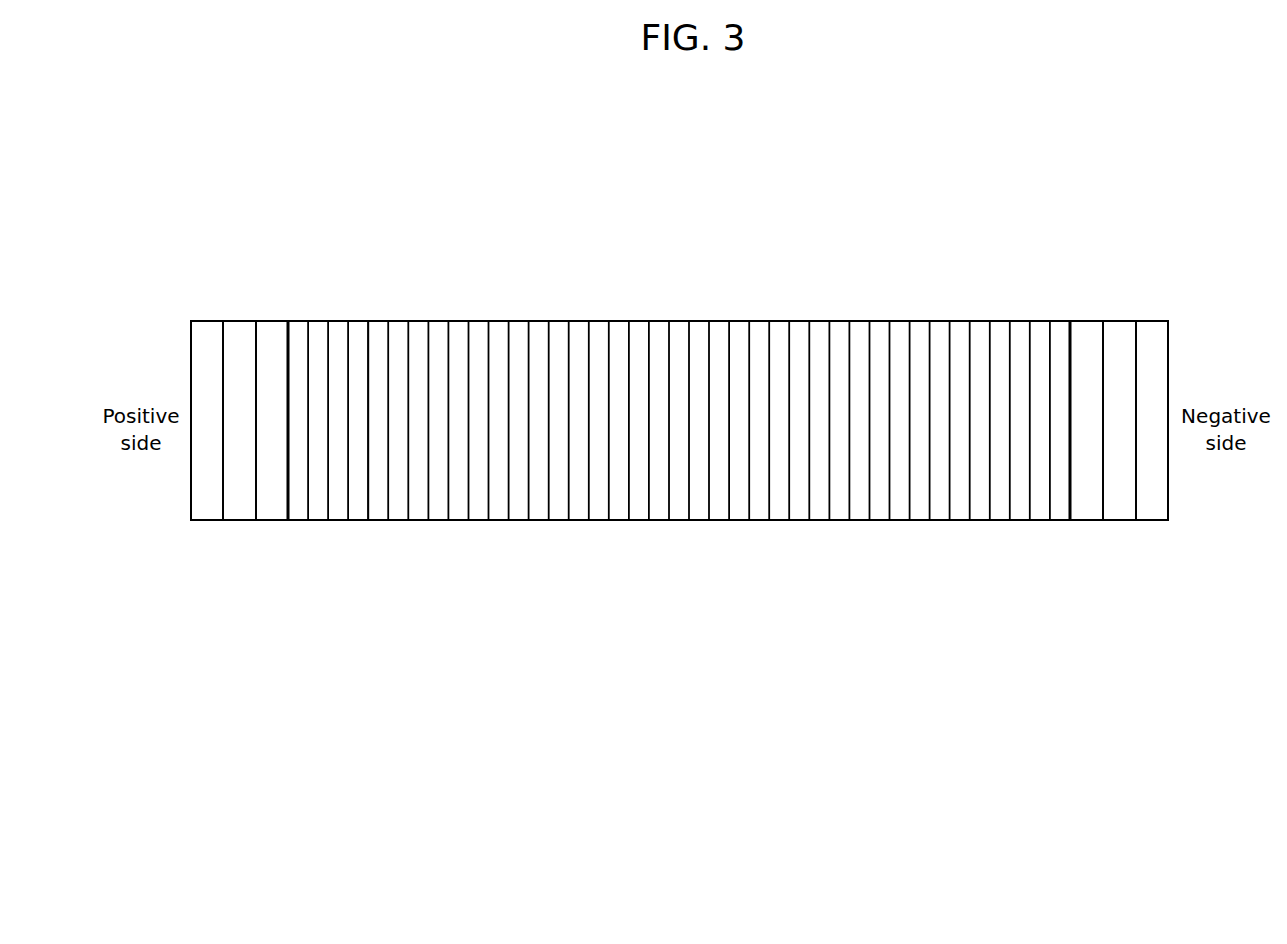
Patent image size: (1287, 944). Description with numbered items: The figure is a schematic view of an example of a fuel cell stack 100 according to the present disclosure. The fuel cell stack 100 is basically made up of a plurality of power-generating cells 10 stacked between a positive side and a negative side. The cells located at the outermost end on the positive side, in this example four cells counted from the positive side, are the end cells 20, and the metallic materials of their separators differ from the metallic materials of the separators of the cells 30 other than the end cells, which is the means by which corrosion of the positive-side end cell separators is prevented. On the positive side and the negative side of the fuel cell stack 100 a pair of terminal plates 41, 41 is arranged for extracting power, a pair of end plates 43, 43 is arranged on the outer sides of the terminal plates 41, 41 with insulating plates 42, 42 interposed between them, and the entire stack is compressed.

The power-generating cell 10 is at (826, 386).
The end cells 20 is at (288, 526).
The cells other than the end cells 30 is at (719, 411).
The terminal plate 41 is at (273, 327).
The insulating plate 42 is at (240, 327).
The end plate 43 is at (205, 327).
The fuel cell stack 100 is at (288, 318).